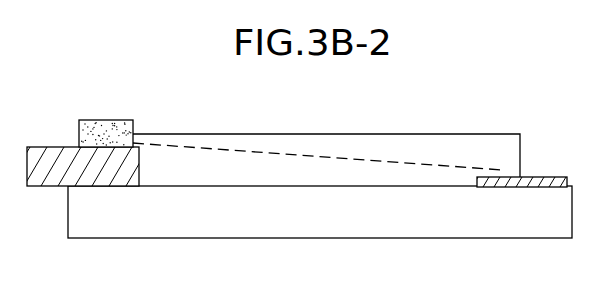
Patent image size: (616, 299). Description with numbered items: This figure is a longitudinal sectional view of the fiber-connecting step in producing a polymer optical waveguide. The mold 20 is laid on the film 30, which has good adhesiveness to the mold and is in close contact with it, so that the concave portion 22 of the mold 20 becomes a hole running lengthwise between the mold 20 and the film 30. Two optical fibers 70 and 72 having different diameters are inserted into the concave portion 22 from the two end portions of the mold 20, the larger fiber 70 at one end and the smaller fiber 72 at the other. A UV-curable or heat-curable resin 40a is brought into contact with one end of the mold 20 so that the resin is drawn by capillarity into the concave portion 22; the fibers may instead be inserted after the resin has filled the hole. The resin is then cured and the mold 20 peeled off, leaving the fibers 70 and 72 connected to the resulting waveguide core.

The mold 20 is at (399, 117).
The concave portion 22 is at (297, 170).
The film 30 is at (487, 215).
The curable resin 40a is at (110, 128).
The optical fiber 70 is at (58, 180).
The optical fiber 72 is at (538, 177).